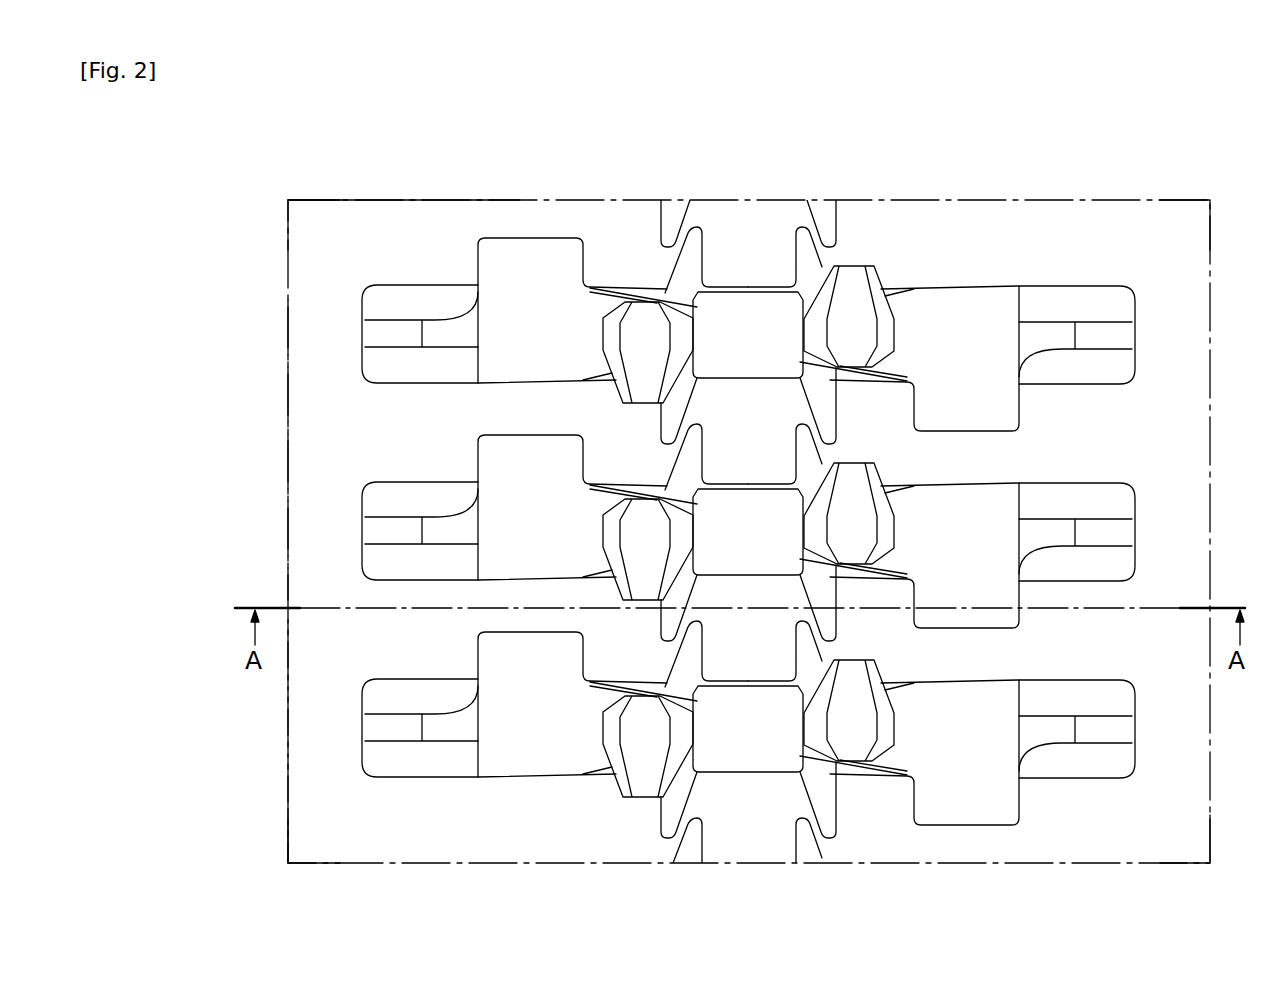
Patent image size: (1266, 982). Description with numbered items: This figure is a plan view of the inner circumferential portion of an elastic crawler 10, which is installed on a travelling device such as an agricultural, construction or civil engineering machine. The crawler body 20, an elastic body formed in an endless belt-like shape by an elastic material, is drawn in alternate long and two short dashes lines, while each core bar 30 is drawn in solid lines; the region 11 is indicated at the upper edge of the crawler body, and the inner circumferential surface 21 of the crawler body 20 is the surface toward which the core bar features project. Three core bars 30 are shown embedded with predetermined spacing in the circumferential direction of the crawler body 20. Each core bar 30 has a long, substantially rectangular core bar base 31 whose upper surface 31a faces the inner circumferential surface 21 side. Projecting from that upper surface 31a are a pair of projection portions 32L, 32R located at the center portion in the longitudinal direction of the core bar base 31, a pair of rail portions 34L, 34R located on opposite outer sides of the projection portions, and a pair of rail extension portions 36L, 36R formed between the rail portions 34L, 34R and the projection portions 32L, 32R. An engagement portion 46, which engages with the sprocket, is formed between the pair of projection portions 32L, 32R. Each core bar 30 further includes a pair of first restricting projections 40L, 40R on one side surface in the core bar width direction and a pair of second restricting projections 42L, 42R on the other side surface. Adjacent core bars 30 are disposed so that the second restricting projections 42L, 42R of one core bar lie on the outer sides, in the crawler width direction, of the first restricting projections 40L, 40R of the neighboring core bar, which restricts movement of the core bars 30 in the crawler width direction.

The elastic crawler 10 is at (287, 246).
The metal sheet 11 is at (320, 222).
The crawler body 20 is at (287, 417).
The inner circumferential surface 21 is at (334, 397).
The core bar 30 is at (1096, 288).
The core bar base 31 is at (402, 492).
The upper surface 31a is at (1100, 573).
The projection portion 32L is at (645, 318).
The projection portion 32R is at (855, 274).
The rail portion 34L is at (488, 263).
The rail portion 34R is at (988, 302).
The rail extension portion 36L is at (603, 303).
The rail extension portion 36R is at (902, 301).
The first restricting projection 40L is at (691, 441).
The first restricting projection 40R is at (805, 452).
The second restricting projection 42L is at (662, 636).
The second restricting projection 42R is at (836, 636).
The engagement portion 46 is at (752, 306).